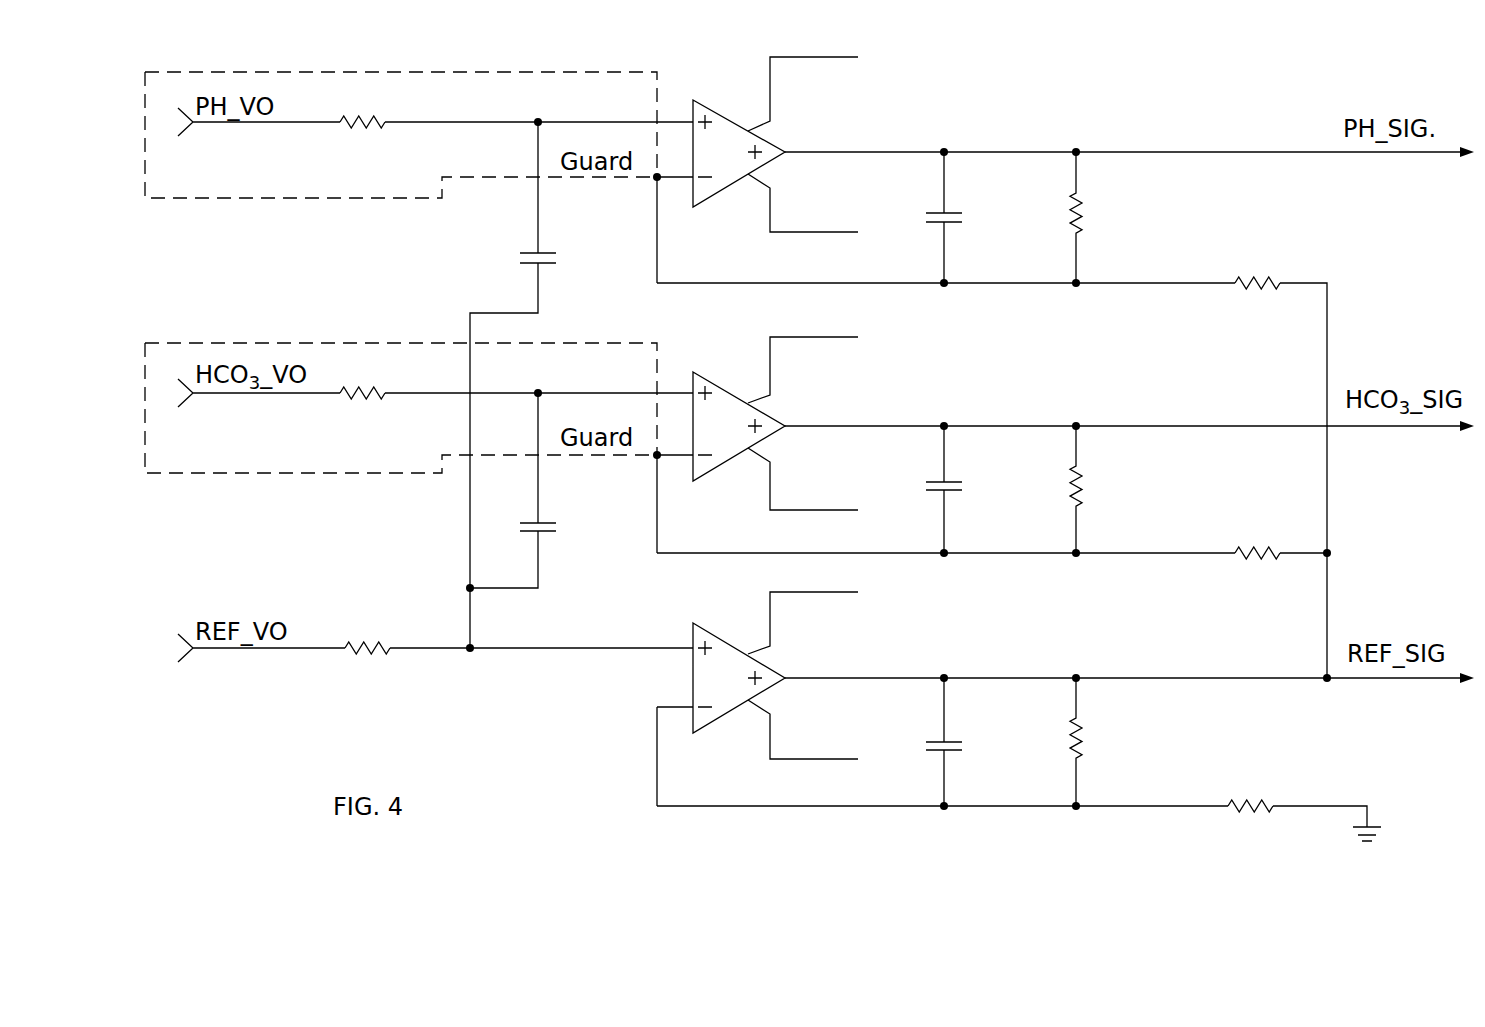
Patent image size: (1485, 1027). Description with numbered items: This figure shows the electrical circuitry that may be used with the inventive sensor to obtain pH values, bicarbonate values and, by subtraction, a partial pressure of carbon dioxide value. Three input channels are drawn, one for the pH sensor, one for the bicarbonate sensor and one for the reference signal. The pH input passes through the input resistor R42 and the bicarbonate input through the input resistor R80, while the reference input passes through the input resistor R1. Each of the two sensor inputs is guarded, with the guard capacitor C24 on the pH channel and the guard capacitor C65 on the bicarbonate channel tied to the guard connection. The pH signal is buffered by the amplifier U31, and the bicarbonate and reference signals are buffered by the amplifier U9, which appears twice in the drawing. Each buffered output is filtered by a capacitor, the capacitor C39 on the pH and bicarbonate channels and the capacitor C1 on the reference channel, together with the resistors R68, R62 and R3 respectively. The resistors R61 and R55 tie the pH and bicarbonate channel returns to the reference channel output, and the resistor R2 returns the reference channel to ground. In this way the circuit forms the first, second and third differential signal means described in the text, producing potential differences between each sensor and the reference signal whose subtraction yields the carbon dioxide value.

The 1.00 meg input resistor (pH channel) R42 is at (369, 137).
The 1.00 meg input resistor (HCO3 channel) R80 is at (380, 408).
The 1.00 meg input resistor (reference channel) R1 is at (382, 664).
The 220p NPO guard capacitor C24 is at (548, 253).
The 220p NPO guard capacitor C65 is at (548, 527).
The LMC6042AIM operational amplifier (pH buffer) U31 is at (817, 145).
The LMC6042AIM operational amplifier (HCO3 / reference buffer) U9 is at (817, 547).
The 100n X7R filter capacitor C39 is at (955, 352).
The 1.00 meg resistor R68 is at (1131, 217).
The 249K resistor R61 is at (1256, 294).
The 1.00 meg resistor R62 is at (1127, 489).
The 249K resistor R55 is at (1252, 566).
The 100n X7R filter capacitor C1 is at (958, 742).
The 244K resistor R3 is at (1103, 742).
The 1.00 meg resistor to ground R2 is at (1260, 817).